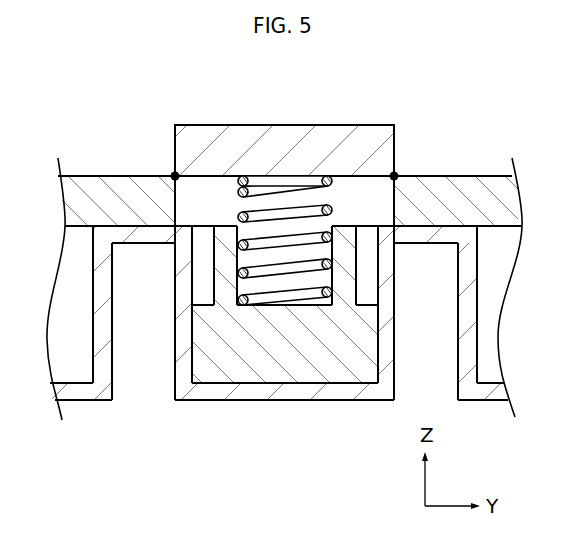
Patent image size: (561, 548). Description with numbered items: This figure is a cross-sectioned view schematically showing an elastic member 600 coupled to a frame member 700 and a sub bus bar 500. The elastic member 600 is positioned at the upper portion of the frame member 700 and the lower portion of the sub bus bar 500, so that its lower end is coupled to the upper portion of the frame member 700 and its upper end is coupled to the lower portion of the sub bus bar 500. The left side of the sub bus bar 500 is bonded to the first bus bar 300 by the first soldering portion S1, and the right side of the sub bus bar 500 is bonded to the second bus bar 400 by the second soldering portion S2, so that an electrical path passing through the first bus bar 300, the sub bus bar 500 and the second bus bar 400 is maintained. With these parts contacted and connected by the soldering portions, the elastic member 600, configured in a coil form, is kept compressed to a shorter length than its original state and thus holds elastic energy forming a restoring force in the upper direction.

The first bus bar 300 is at (105, 175).
The second bus bar 400 is at (460, 176).
The sub bus bar 500 is at (323, 125).
The elastic member 600 is at (282, 293).
The frame member 700 is at (338, 402).
The first soldering portion S1 is at (169, 167).
The second soldering portion S2 is at (399, 167).